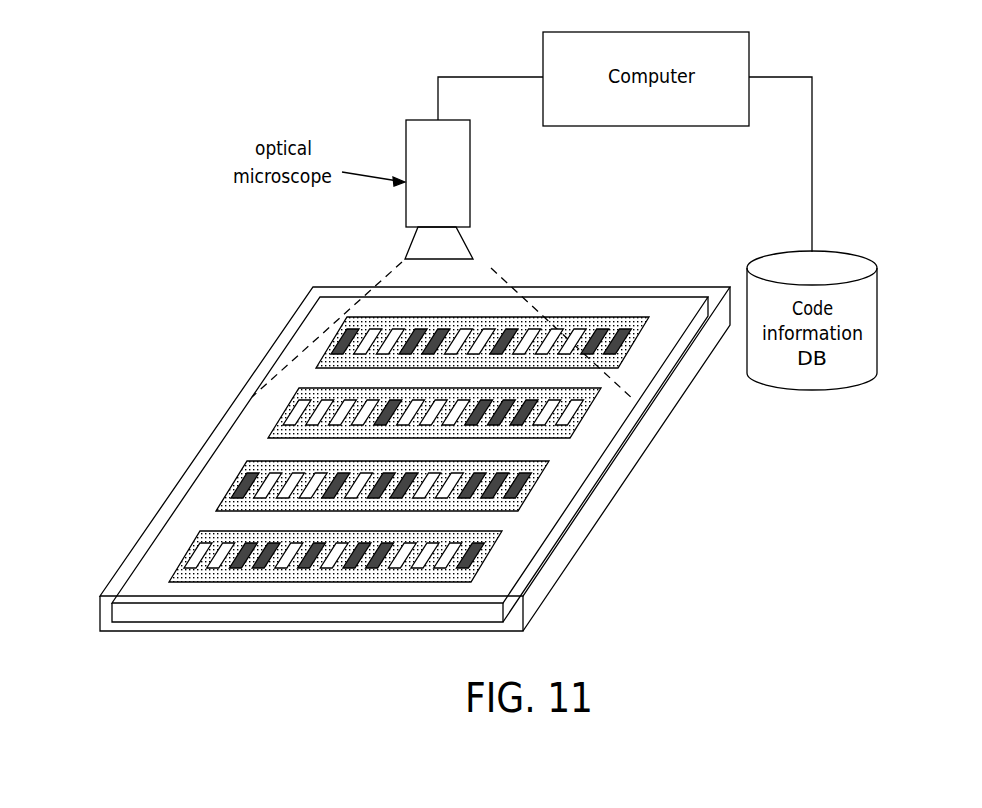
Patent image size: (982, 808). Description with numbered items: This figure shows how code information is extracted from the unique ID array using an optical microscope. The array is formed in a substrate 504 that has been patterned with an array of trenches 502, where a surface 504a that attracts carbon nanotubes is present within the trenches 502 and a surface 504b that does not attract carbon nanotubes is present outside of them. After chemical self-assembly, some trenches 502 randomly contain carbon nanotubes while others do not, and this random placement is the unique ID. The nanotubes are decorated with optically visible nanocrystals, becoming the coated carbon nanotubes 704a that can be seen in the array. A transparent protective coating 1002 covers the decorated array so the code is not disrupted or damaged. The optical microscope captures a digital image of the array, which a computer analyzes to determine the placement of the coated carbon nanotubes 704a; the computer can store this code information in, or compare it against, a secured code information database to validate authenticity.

The protective coating 1002 is at (273, 348).
The trenches 502 is at (282, 413).
The carbon nanotubes coated with optically visible nanocrystals 704a is at (242, 483).
The substrate 504 is at (97, 572).
The surface which attracts the carbon nanotubes 504a is at (487, 550).
The surface which does not attract the carbon nanotubes 504b is at (173, 603).